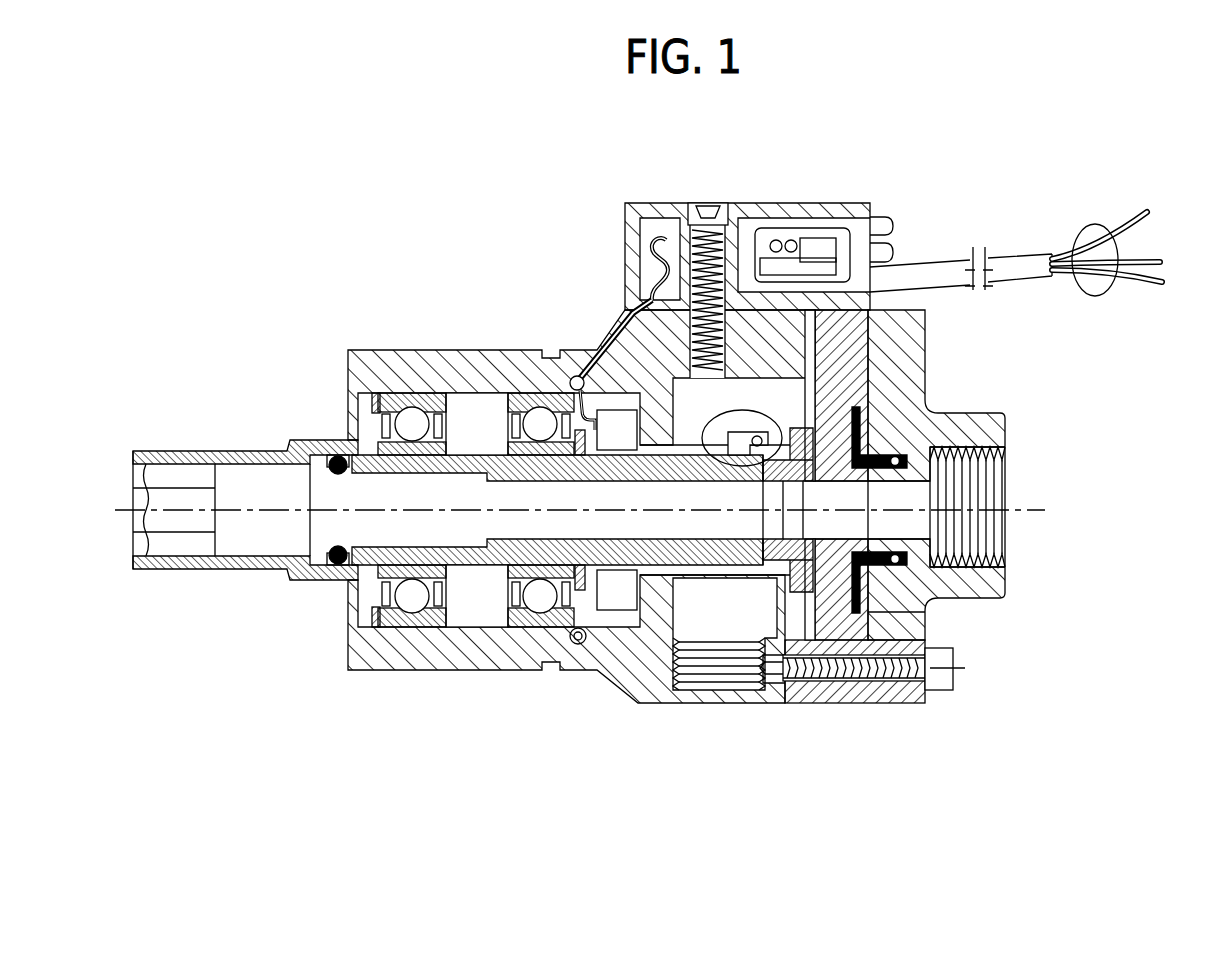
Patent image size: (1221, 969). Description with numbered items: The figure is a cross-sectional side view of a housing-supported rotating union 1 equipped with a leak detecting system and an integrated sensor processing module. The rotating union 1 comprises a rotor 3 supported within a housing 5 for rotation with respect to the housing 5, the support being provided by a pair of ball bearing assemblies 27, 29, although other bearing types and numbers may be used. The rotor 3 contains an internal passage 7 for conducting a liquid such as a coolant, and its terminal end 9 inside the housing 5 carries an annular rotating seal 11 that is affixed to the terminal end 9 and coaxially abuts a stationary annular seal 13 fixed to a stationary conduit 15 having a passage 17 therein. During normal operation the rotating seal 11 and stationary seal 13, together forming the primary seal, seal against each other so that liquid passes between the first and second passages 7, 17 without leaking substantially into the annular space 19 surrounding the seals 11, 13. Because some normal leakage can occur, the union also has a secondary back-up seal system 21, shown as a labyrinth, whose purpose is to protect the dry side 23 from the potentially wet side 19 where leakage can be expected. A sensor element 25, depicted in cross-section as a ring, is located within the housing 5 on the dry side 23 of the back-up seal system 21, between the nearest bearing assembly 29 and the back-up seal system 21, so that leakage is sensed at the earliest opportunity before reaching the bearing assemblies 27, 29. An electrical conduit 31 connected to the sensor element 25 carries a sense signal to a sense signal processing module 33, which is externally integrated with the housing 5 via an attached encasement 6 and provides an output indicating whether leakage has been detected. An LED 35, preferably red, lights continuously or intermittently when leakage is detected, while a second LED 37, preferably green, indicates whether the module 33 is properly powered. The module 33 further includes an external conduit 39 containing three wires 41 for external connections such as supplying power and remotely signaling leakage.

The rotating union 1 is at (383, 318).
The rotor 3 is at (300, 447).
The housing 5 is at (502, 365).
The attached encasement 6 is at (632, 205).
The internal passage 7 is at (385, 490).
The terminal end 9 is at (763, 478).
The rotating seal 11 is at (782, 558).
The stationary seal 13 is at (763, 480).
The stationary conduit 15 is at (793, 440).
The passage 17 is at (877, 488).
The annular space 19 is at (693, 612).
The back-up seal system 21 is at (753, 407).
The dry side 23 is at (608, 362).
The sensor element 25 is at (568, 377).
The ball bearing assembly 27 is at (412, 598).
The ball bearing assembly 29 is at (540, 598).
The electrical conduit 31 is at (657, 250).
The sense signal processing module 33 is at (747, 243).
The LED 35 is at (893, 225).
The second LED 37 is at (893, 252).
The external conduit 39 is at (1018, 265).
The wires 41 is at (1093, 297).